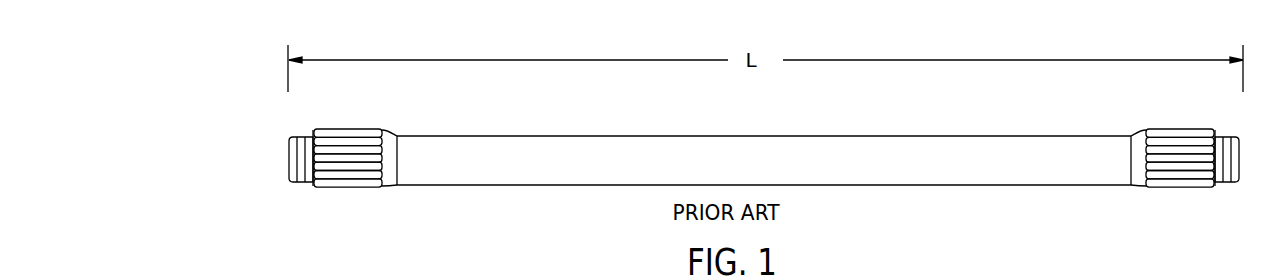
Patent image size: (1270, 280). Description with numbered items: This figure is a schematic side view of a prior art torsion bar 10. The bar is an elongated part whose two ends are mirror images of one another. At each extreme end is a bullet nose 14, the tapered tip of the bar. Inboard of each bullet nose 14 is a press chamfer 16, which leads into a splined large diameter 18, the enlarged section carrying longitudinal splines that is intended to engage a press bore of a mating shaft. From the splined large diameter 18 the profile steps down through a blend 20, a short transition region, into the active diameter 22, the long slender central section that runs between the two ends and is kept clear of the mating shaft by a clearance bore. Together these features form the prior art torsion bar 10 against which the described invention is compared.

The prior art torsion bar 10 is at (231, 101).
The bullet nose 14 is at (294, 137).
The press chamfer 16 is at (313, 131).
The splined large diameter 18 is at (355, 130).
The blend 20 is at (391, 134).
The active diameter 22 is at (730, 136).